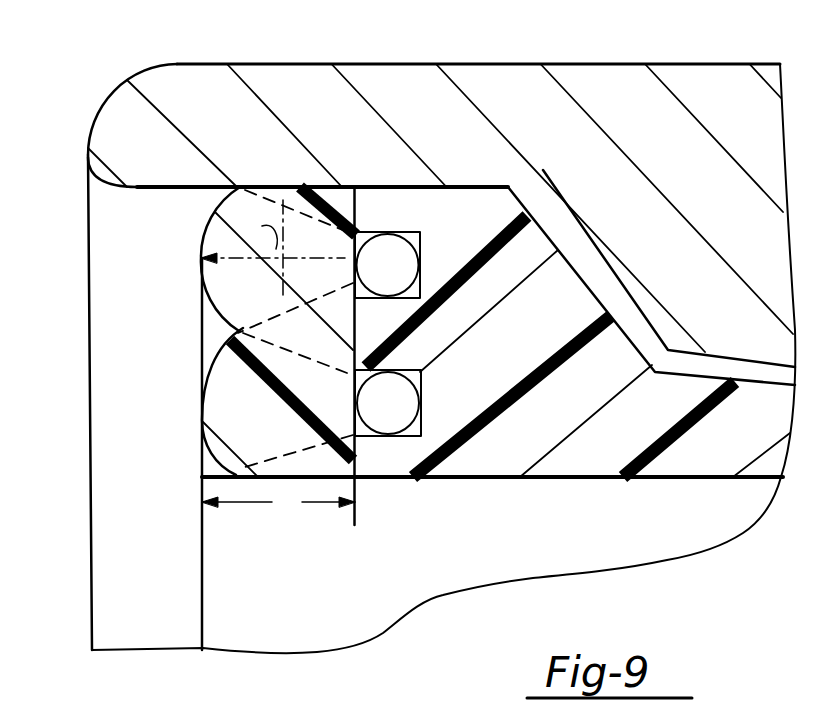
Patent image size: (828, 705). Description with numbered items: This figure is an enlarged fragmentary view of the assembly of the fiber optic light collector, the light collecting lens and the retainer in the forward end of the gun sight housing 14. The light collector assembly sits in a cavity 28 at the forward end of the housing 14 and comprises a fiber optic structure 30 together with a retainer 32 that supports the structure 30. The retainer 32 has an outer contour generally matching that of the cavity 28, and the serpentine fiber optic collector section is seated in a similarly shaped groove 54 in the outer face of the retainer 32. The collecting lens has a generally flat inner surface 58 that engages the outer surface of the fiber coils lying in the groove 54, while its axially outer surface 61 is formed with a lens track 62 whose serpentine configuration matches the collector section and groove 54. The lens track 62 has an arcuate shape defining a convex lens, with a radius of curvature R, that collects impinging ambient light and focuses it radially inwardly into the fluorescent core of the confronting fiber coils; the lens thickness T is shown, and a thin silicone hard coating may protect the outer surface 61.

The housing 14 is at (368, 89).
The cavity 28 is at (137, 188).
The fiber optic structure 30 is at (391, 275).
The retainer 32 is at (458, 197).
The groove 54 is at (358, 452).
The inner surface 58 is at (356, 188).
The outer surface 61 is at (202, 455).
The lens track 62 is at (200, 259).